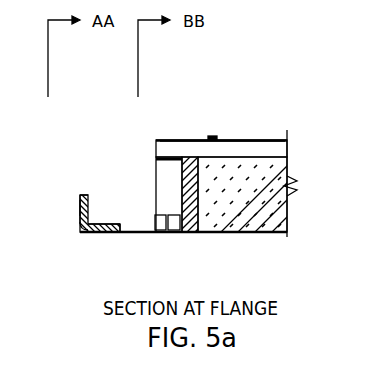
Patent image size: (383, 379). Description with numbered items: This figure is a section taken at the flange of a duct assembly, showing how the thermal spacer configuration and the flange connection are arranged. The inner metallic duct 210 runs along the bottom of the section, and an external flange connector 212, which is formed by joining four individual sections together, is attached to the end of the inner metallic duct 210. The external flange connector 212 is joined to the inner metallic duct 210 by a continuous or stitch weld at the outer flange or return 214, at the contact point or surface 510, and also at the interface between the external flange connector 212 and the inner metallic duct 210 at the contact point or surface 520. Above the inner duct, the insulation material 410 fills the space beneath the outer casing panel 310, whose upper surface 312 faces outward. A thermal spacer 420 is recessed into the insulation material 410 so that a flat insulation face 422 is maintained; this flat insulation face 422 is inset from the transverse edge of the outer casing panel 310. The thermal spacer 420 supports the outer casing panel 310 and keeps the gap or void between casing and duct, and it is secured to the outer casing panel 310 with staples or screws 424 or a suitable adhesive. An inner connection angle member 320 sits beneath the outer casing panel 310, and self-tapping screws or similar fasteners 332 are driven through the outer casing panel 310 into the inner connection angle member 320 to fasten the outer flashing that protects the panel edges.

The inner metallic duct 210 is at (87, 234).
The external flange connector 212 is at (83, 194).
The outer flange or return 214 is at (79, 226).
The outer casing panel 310 is at (258, 141).
The plate upper surface 312 is at (170, 140).
The inner connection angle member 320 is at (162, 162).
The self-tapping screws or similar fasteners 332 is at (212, 136).
The insulation material 410 is at (288, 163).
The thermal spacer 420 is at (178, 198).
The flat insulation face 422 is at (178, 181).
The staples or screws 424 is at (192, 233).
The contact point or surface 510 is at (79, 208).
The contact point or surface 520 is at (118, 234).